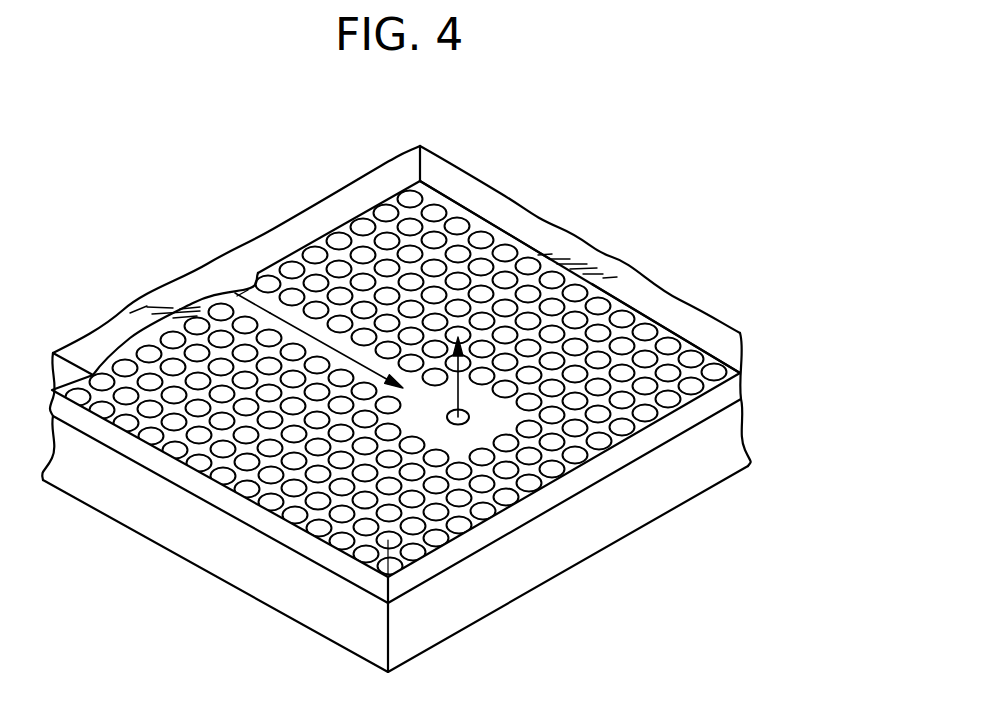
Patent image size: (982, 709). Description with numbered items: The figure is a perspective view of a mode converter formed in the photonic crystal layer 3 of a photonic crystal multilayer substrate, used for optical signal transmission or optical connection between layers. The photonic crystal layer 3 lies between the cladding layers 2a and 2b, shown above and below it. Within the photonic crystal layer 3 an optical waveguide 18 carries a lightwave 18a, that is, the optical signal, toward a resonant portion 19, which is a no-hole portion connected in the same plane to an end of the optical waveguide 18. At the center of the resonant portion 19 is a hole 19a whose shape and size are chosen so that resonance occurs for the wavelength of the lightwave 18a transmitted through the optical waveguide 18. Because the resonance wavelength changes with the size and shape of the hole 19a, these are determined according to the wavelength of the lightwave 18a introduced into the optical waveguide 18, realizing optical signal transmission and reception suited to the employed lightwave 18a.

The cladding layer 2a is at (720, 443).
The cladding layer 2b is at (727, 350).
The photonic crystal layer 3 is at (727, 381).
The optical waveguide 18 is at (318, 328).
The lightwave 18a is at (243, 291).
The resonant portion 19 is at (488, 432).
The hole 19a is at (457, 418).